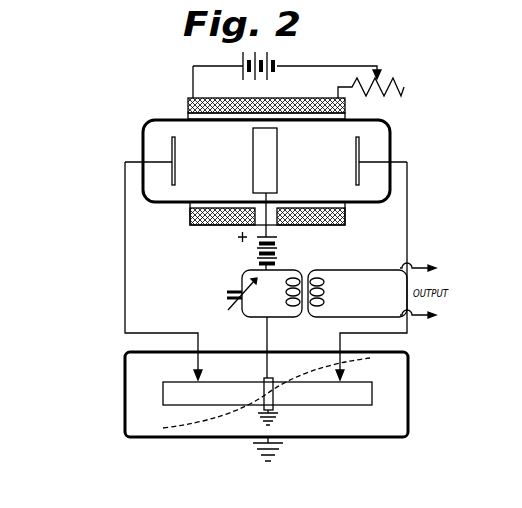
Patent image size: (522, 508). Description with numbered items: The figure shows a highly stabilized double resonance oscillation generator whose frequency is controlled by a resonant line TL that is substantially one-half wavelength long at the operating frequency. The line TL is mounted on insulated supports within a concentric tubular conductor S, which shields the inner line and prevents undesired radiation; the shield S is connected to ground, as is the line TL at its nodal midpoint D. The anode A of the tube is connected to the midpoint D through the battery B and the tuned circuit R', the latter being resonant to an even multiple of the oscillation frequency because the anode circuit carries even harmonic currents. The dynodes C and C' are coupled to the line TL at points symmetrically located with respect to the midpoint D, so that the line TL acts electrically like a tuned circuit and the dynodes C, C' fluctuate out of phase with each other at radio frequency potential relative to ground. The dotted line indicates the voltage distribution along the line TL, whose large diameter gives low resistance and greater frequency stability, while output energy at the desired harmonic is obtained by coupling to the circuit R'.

The dynode C is at (161, 160).
The dynode C' is at (381, 160).
The anode A is at (279, 158).
The battery B is at (280, 251).
The tuned circuit R' is at (160, 262).
The concentric tubular conductor S is at (412, 383).
The resonant line TL is at (347, 405).
The midpoint D is at (273, 400).